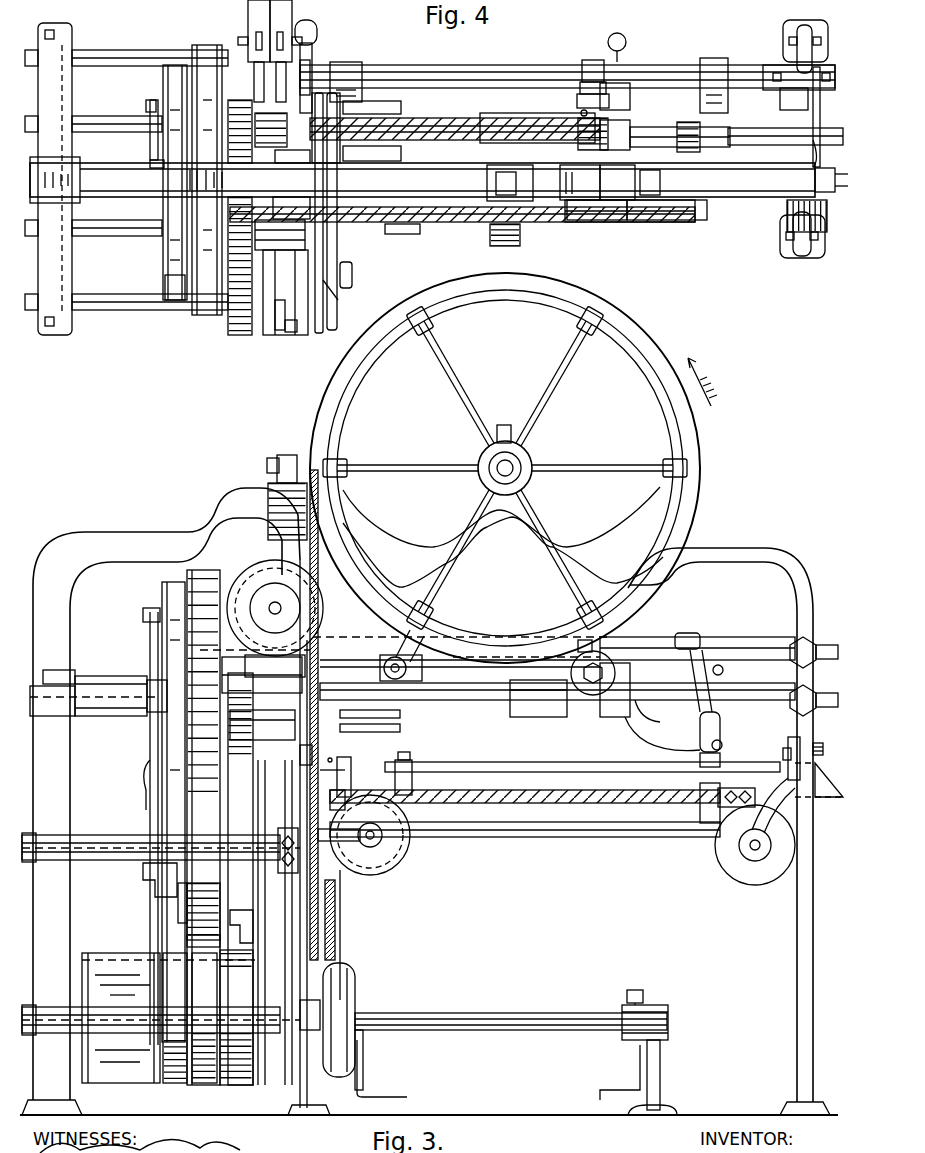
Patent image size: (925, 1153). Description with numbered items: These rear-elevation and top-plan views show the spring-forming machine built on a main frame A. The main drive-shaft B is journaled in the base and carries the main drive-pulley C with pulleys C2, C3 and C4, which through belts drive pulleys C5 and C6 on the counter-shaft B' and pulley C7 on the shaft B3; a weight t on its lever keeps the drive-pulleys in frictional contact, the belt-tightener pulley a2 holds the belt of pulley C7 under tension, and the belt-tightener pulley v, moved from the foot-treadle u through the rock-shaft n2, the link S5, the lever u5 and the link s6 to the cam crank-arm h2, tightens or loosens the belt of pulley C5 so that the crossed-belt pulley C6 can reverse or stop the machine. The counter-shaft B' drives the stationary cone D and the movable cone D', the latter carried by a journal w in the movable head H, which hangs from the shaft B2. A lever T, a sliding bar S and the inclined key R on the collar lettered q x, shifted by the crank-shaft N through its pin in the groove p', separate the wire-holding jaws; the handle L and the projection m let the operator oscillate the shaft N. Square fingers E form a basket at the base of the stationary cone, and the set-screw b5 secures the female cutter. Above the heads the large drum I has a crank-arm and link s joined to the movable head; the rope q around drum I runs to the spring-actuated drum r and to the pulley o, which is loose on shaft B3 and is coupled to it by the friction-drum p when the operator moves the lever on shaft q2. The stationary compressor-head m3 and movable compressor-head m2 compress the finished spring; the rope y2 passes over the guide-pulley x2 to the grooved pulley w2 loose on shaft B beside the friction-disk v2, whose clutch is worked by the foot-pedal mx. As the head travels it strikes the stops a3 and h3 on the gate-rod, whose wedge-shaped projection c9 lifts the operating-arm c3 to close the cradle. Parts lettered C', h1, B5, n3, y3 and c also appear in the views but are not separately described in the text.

In FIG. 4, the main frame A is at (829, 52).
In FIG. 3, the main frame A is at (821, 946).
In FIG. 4, the weight t is at (254, 51).
In FIG. 4, the shaft or journal w is at (286, 51).
In FIG. 4, the cam crank-arm h2 is at (156, 100).
In FIG. 4, the link s6 is at (152, 158).
In FIG. 3, the link s6 is at (150, 768).
In FIG. 4, the pulley C6 is at (172, 300).
In FIG. 3, the pulley C6 is at (162, 586).
In FIG. 4, the pulley C5 is at (205, 300).
In FIG. 3, the pulley C5 is at (190, 572).
In FIG. 4, the pulley C7 is at (230, 336).
In FIG. 4, the spring-actuated drum r is at (262, 258).
In FIG. 4, the stationary compressor-head m3 is at (352, 62).
In FIG. 3, the stationary compressor-head m3 is at (352, 762).
In FIG. 4, the movable compressor-head m2 is at (712, 60).
In FIG. 3, the movable compressor-head m2 is at (700, 760).
In FIG. 4, the square fingers E is at (378, 103).
In FIG. 3, the square fingers E is at (400, 728).
In FIG. 4, the stationary cone D is at (455, 117).
In FIG. 4, the movable cone D' is at (537, 116).
In FIG. 4, the projection m is at (626, 42).
In FIG. 4, the handle L is at (608, 66).
In FIG. 4, the crank-shaft N is at (577, 96).
In FIG. 4, the pulley o is at (580, 112).
In FIG. 3, the pulley o is at (332, 757).
In FIG. 4, the groove p' is at (623, 116).
In FIG. 4, the movable head H is at (643, 152).
In FIG. 3, the movable head H is at (590, 700).
In FIG. 4, the shaft B2 is at (825, 130).
In FIG. 4, the key R is at (575, 150).
In FIG. 4, the flexible connection or rope q is at (586, 158).
In FIG. 3, the flexible connection or rope q is at (305, 660).
In FIG. 4, the block x is at (600, 160).
In FIG. 4, the pin c is at (630, 182).
In FIG. 4, the sliding bar S is at (445, 224).
In FIG. 4, the drum or pulley I is at (645, 226).
In FIG. 3, the drum or pulley I is at (665, 437).
In FIG. 4, the shaft B3 is at (352, 275).
In FIG. 4, the friction-drum p is at (337, 296).
In FIG. 3, the friction-drum p is at (342, 758).
In FIG. 3, the gear C' is at (261, 879).
In FIG. 3, the bracket h1 is at (304, 774).
In FIG. 3, the link s is at (460, 667).
In FIG. 3, the bar B5 is at (722, 637).
In FIG. 3, the counter-shaft B' is at (579, 694).
In FIG. 3, the lever T is at (722, 722).
In FIG. 3, the set-screw b5 is at (472, 766).
In FIG. 3, the stop a3 is at (417, 770).
In FIG. 3, the bracket n3 is at (350, 790).
In FIG. 3, the flexible connection or rope y2 is at (500, 795).
In FIG. 3, the rock-shaft n2 is at (700, 788).
In FIG. 3, the pulley y3 is at (755, 831).
In FIG. 3, the stop h3 is at (780, 760).
In FIG. 3, the operating-arm c3 is at (821, 743).
In FIG. 3, the wedge-shaped projection c9 is at (820, 774).
In FIG. 3, the guide-pulley x2 is at (364, 835).
In FIG. 3, the main drive-pulley C is at (151, 967).
In FIG. 3, the pulley C3 is at (175, 1026).
In FIG. 3, the pulley C2 is at (206, 1026).
In FIG. 3, the pulley C4 is at (239, 1025).
In FIG. 3, the link S5 is at (180, 908).
In FIG. 3, the lever u5 is at (156, 880).
In FIG. 3, the belt-tightener pulley v is at (203, 943).
In FIG. 3, the belt-tightener pulley a2 is at (250, 915).
In FIG. 3, the friction-disk v2 is at (339, 1013).
In FIG. 3, the drum or grooved pulley w2 is at (345, 1064).
In FIG. 3, the foot-treadle u is at (380, 1096).
In FIG. 3, the main drive-shaft B is at (310, 1030).
In FIG. 3, the shaft q2 is at (455, 1013).
In FIG. 3, the foot-pedal mx is at (620, 1072).